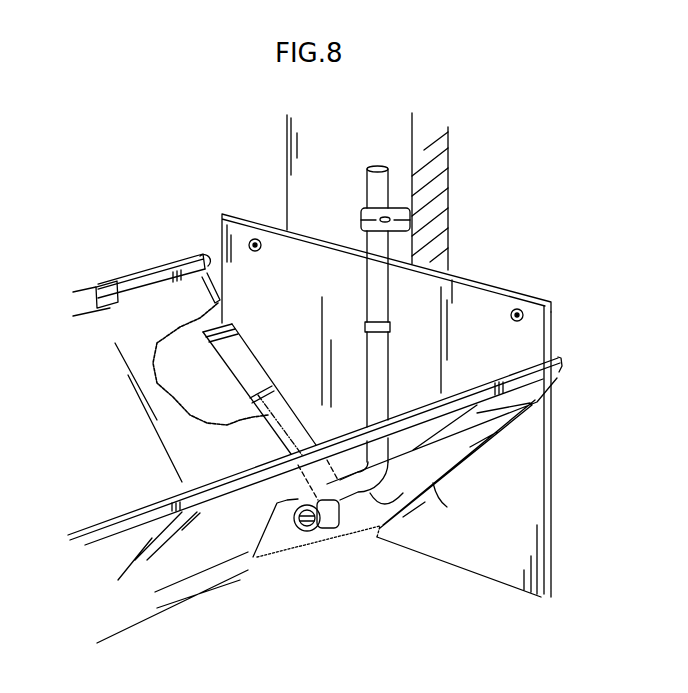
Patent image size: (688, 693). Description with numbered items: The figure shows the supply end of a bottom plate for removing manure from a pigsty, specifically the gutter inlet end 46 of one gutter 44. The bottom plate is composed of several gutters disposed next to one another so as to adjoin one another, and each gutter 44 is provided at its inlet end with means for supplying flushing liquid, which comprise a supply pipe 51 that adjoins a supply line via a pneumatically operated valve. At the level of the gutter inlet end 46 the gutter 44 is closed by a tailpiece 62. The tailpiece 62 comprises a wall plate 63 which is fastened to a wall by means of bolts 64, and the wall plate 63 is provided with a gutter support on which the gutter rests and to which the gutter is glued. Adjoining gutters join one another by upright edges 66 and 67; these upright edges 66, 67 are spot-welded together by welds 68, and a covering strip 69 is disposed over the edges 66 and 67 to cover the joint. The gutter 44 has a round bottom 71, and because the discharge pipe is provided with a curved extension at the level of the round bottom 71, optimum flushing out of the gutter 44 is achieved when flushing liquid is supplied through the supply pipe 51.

The gutter 44 is at (148, 476).
The gutter inlet end 46 is at (481, 285).
The supply pipe 51 is at (371, 182).
The tailpiece 62 is at (487, 533).
The wall plate 63 is at (537, 340).
The bolts 64 is at (256, 239).
The upright edge 66 is at (207, 266).
The upright edge 67 is at (167, 263).
The welds 68 is at (140, 278).
The covering strip 69 is at (100, 287).
The round bottom 71 is at (278, 560).